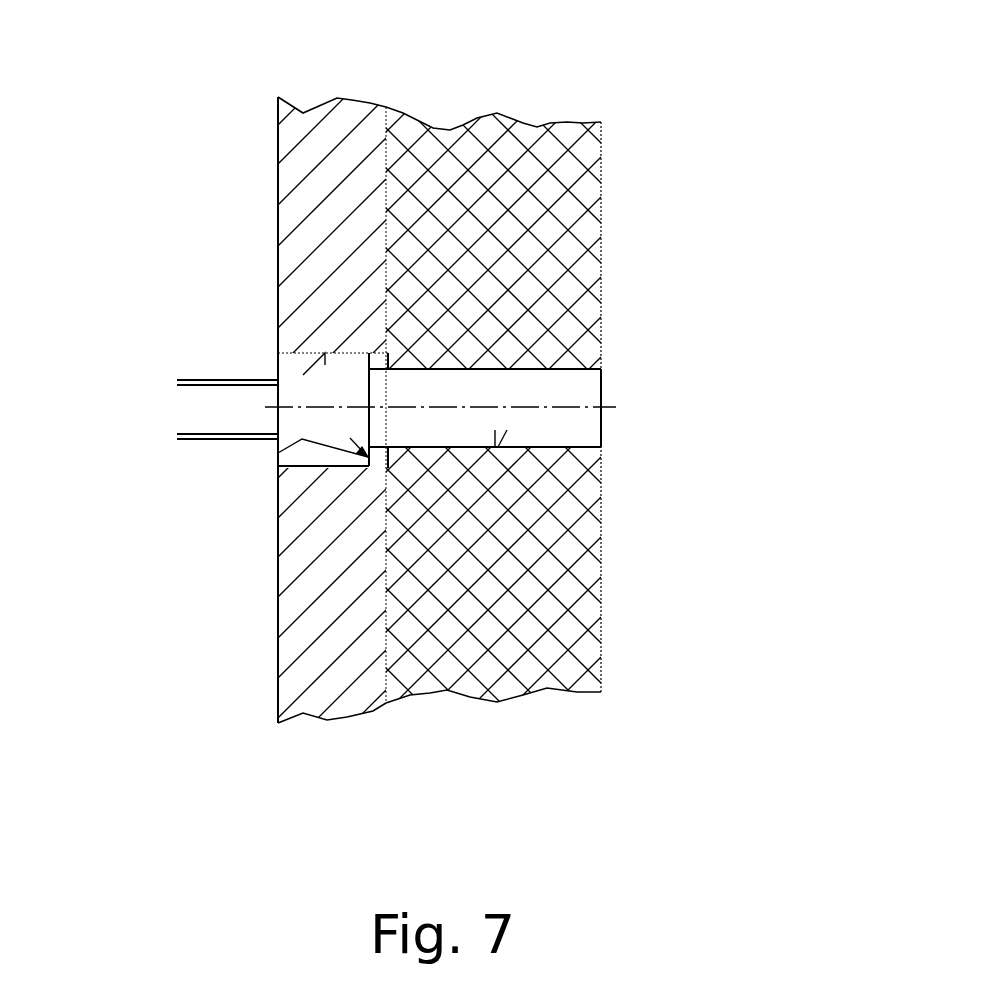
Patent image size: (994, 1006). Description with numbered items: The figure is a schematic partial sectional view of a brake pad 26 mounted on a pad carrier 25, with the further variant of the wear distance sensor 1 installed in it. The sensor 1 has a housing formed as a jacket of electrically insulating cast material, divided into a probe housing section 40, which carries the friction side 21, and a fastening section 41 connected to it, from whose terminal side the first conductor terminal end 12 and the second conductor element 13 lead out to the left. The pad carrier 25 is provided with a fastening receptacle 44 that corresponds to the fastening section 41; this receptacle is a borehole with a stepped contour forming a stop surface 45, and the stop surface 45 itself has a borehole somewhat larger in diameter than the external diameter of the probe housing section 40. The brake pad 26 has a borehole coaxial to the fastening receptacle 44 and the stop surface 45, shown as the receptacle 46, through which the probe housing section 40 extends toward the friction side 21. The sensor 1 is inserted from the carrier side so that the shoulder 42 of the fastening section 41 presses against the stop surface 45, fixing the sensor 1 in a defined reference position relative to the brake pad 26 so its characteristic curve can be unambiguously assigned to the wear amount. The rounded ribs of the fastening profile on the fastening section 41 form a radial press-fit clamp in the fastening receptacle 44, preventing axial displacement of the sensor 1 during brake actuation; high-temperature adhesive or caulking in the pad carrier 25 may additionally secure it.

The wear distance sensor 1 is at (685, 397).
The first conductor terminal end 12 is at (177, 437).
The second conductor element 13 is at (177, 381).
The friction side 21 is at (605, 383).
The pad carrier 25 is at (292, 178).
The brake pad 26 is at (542, 148).
The probe housing section 40 is at (582, 428).
The fastening section 41 is at (280, 498).
The shoulder 42 is at (372, 361).
The fastening receptacle 44 is at (303, 375).
The stop surface 45 is at (278, 453).
The receptacle 46 is at (507, 429).